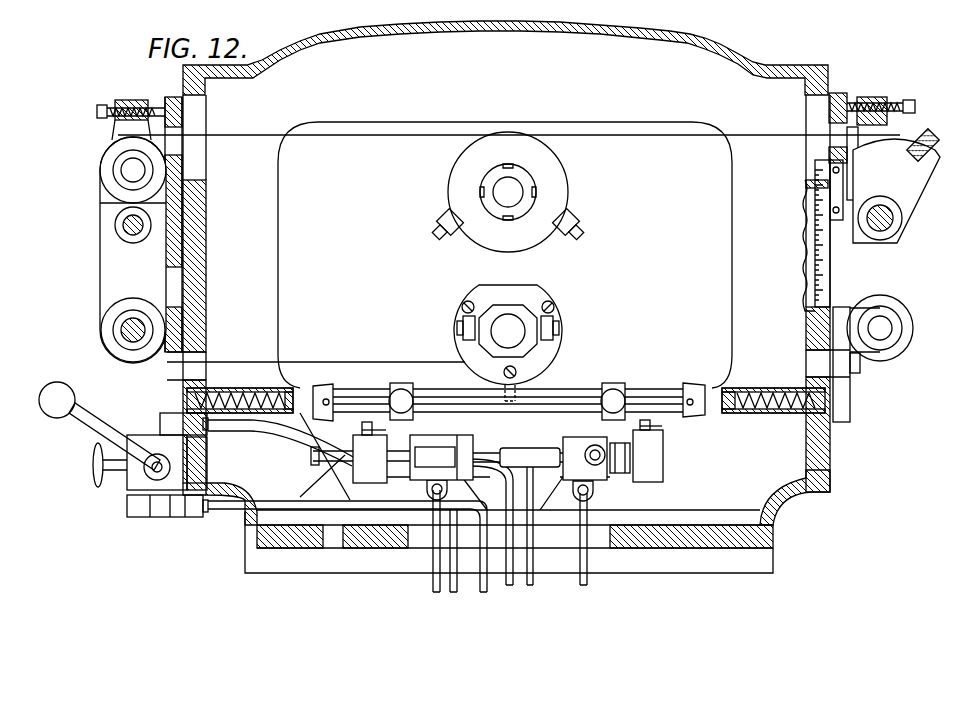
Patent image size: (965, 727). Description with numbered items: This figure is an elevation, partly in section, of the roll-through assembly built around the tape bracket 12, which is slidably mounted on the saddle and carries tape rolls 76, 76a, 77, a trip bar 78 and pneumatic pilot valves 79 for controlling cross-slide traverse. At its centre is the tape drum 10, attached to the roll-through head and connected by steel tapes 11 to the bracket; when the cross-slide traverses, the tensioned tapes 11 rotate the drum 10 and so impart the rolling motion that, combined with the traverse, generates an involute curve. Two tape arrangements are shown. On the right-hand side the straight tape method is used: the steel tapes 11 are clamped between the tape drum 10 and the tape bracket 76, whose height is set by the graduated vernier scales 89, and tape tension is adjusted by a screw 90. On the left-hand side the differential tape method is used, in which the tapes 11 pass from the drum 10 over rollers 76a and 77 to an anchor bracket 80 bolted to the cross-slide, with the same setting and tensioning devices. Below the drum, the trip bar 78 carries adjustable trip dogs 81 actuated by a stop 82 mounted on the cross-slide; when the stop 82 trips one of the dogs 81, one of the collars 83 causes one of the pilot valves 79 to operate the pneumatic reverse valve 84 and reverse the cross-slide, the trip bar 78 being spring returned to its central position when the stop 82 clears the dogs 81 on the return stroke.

The tape drum 10 is at (560, 186).
The steel tapes 11 is at (627, 135).
The tape bracket 12 is at (722, 44).
The tape bracket 76 is at (873, 257).
The tape roll 76a is at (107, 173).
The tape roll 77 is at (115, 348).
The trip bar 78 is at (663, 392).
The pneumatic pilot valves 79 is at (508, 451).
The anchor bracket 80 is at (530, 303).
The trip dogs 81 is at (412, 386).
The stop 82 is at (538, 385).
The collars 83 is at (324, 395).
The pneumatic reverse valve 84 is at (93, 474).
The vernier scales 89 is at (828, 170).
The screw 90 is at (907, 99).